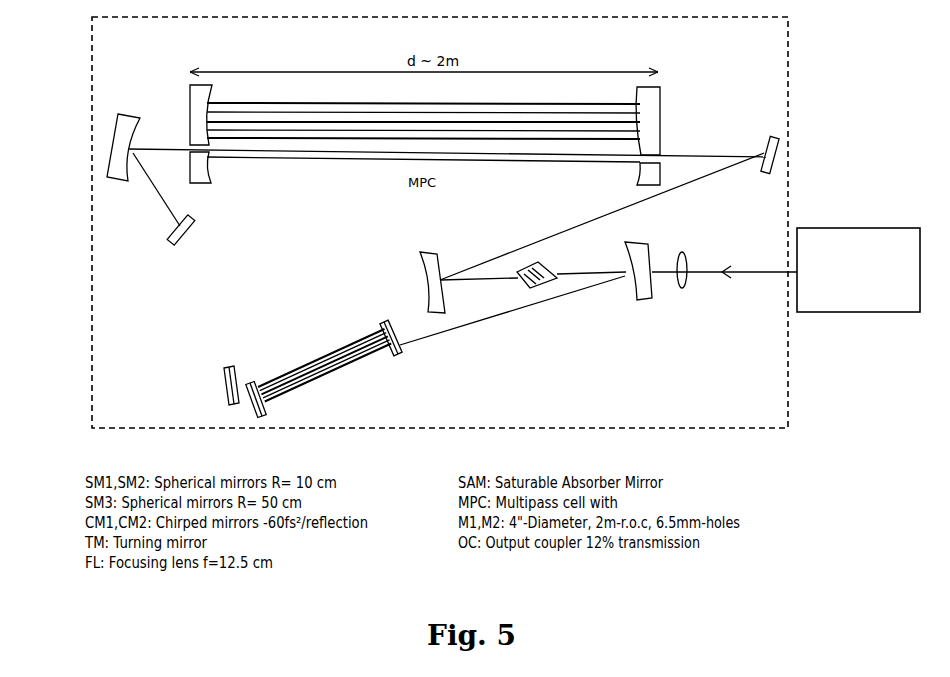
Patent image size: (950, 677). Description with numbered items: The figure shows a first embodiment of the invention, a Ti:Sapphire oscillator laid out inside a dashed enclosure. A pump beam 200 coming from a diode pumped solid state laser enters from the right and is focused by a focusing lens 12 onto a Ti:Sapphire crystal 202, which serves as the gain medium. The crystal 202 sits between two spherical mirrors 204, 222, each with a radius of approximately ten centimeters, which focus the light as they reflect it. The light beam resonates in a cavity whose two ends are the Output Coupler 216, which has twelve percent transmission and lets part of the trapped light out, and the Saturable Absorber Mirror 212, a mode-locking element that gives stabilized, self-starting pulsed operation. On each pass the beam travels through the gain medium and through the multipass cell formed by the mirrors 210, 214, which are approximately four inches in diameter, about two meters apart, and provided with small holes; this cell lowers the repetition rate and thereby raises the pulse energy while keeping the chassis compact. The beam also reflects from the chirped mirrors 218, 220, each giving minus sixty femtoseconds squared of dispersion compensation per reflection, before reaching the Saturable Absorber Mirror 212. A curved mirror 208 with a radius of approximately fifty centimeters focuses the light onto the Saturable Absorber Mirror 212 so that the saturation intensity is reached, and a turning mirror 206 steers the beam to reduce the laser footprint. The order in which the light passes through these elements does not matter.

The pump beam 200 is at (853, 312).
The Ti:Sapphire crystal 202 is at (535, 289).
The spherical mirror 204 is at (421, 267).
The turning mirror 206 is at (778, 147).
The curved mirror 208 is at (112, 150).
The multipass cell mirror 210 is at (199, 98).
The Saturable Absorber Mirror 212 is at (185, 245).
The multipass cell mirror 214 is at (657, 107).
The Output Coupler 216 is at (224, 376).
The chirped mirror 218 is at (256, 418).
The chirped mirror 220 is at (400, 356).
The spherical mirror 222 is at (648, 250).
The focusing lens 12 is at (685, 288).